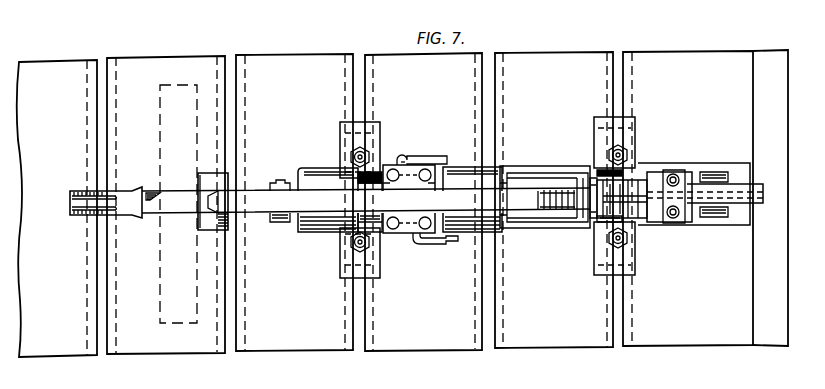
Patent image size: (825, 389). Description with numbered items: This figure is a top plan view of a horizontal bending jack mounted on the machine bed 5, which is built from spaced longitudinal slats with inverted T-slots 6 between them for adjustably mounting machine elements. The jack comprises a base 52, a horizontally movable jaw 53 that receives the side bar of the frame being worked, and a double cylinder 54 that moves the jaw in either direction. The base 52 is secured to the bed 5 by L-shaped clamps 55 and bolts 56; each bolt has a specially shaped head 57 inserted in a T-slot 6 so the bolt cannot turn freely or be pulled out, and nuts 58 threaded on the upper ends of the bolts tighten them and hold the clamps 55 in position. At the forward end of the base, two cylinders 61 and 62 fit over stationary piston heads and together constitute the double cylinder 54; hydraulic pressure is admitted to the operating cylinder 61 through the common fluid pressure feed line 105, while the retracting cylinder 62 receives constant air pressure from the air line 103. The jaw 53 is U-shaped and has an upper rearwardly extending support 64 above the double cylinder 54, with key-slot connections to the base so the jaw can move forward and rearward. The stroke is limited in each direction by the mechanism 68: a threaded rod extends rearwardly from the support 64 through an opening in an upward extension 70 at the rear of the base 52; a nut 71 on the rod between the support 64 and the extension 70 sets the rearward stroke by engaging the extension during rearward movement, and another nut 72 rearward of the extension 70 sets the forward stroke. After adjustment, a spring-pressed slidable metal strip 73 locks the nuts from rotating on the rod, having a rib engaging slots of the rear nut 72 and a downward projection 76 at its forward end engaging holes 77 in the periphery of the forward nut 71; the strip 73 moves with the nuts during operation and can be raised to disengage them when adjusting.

The machine bed 5 is at (750, 282).
The inverted T-slots 6 is at (105, 307).
The base 52 is at (526, 167).
The horizontally movable jaw 53 is at (84, 218).
The double cylinder 54 is at (320, 168).
The L-shaped clamps 55 is at (342, 124).
The bolts 56 is at (366, 156).
The specially shaped heads 57 is at (606, 249).
The nuts 58 is at (367, 150).
The cylinder 61 is at (300, 235).
The cylinder 62 is at (473, 234).
The upper rearwardly extending support 64 is at (492, 205).
The mechanism 68 is at (707, 158).
The upward extension 70 is at (657, 173).
The nut 71 is at (596, 222).
The nut 72 is at (715, 173).
The slidable metal strip 73 is at (753, 185).
The downward projection 76 is at (589, 183).
The holes 77 is at (605, 172).
The air line 103 is at (448, 244).
The common fluid pressure feed line 105 is at (430, 156).